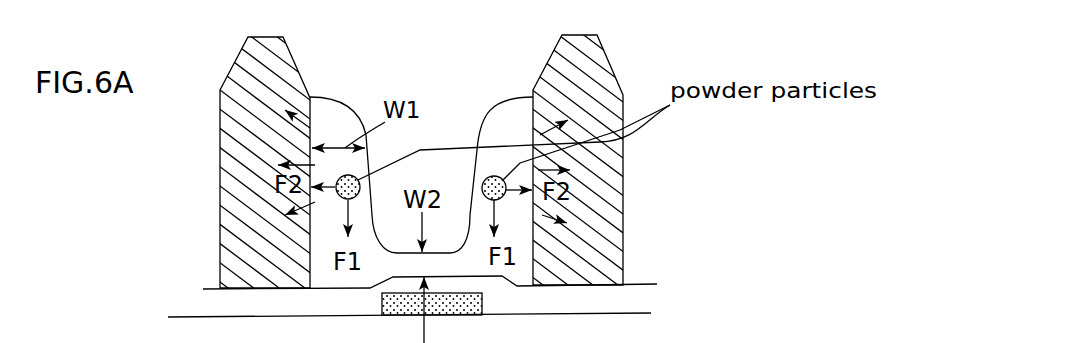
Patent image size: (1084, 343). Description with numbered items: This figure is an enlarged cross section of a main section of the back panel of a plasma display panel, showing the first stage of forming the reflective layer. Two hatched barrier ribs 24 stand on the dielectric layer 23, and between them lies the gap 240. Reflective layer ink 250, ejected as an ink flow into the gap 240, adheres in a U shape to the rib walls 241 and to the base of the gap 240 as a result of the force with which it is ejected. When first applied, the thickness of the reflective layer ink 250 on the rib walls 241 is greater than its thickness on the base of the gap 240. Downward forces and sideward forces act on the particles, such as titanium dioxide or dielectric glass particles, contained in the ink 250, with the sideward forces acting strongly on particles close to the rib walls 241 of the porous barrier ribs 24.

The dielectric layer 23 is at (638, 302).
The barrier ribs 24 is at (290, 60).
The gap 240 is at (421, 129).
The rib walls 241 is at (421, 146).
The reflective layer ink 250 is at (346, 117).